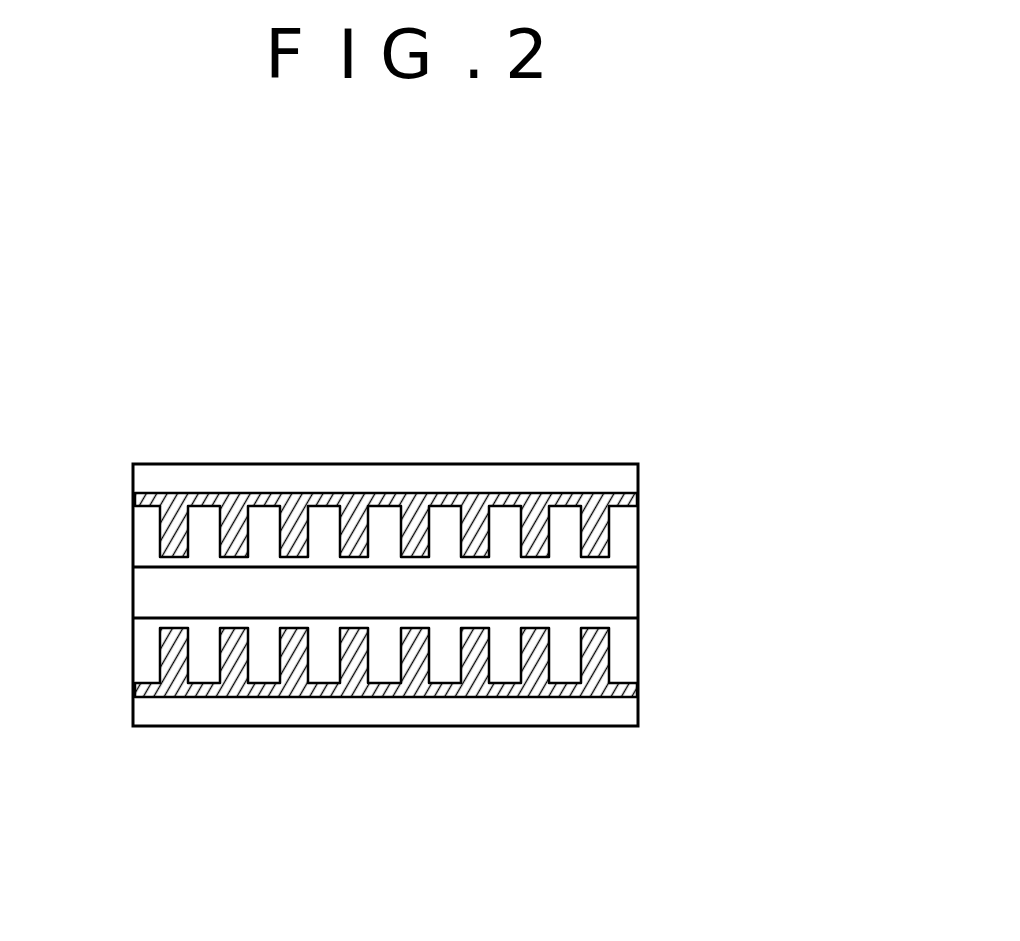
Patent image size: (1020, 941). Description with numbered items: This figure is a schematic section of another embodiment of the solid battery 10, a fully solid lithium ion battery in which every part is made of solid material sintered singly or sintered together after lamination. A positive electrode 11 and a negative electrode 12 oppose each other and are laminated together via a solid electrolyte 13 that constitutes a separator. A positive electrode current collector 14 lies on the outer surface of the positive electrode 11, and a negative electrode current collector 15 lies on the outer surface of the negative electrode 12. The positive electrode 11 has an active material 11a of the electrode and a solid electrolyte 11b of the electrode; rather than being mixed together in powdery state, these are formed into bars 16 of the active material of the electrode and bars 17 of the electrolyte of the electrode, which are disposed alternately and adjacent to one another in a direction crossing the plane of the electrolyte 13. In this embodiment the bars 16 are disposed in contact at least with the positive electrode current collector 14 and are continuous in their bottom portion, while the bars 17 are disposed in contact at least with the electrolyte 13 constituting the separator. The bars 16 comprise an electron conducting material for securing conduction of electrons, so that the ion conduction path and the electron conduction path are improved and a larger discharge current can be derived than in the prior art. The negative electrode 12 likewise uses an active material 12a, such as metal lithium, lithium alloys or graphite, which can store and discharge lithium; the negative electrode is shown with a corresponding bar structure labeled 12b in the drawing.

The solid battery 10 is at (660, 363).
The positive electrode 11 is at (810, 425).
The active material of the electrode 11a is at (603, 522).
The solid electrolyte of the electrode 11b is at (625, 547).
The negative electrode 12 is at (810, 613).
The active material 12a is at (602, 638).
The electrode base layer 12b is at (627, 665).
The solid electrolyte 13 is at (617, 597).
The positive electrode current collector 14 is at (467, 475).
The negative electrode current collector 15 is at (507, 720).
The bars of the active material of the electrode 16 is at (172, 523).
The bars of the electrolyte of the electrode 17 is at (143, 543).